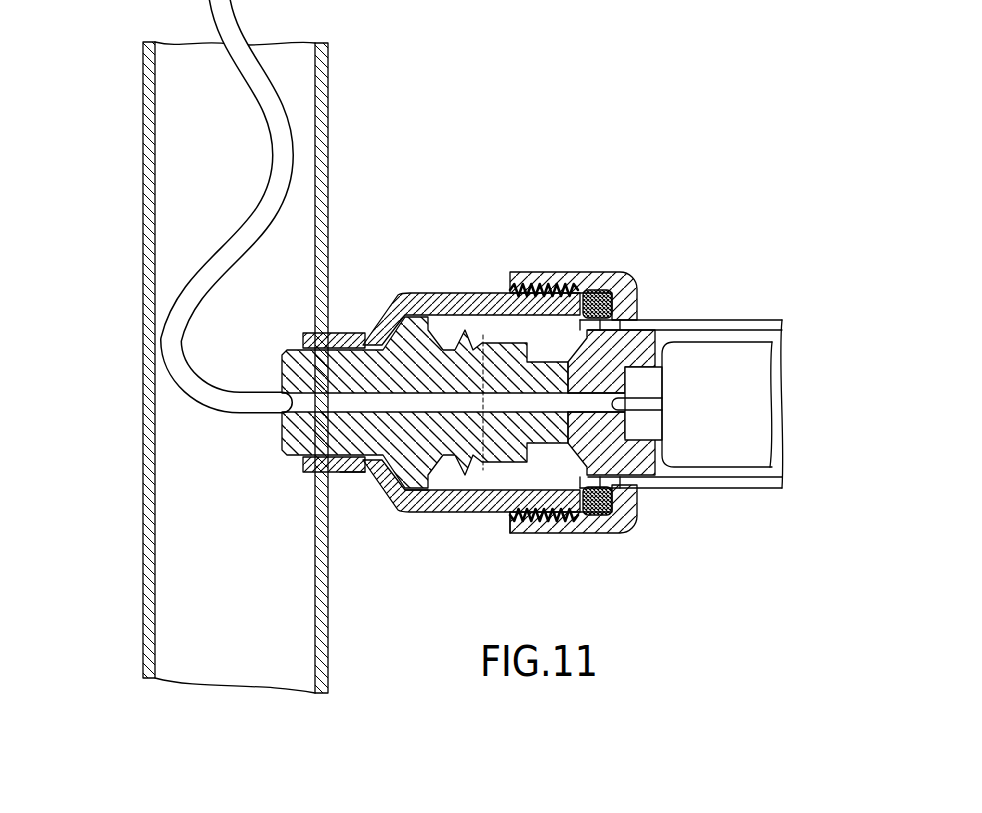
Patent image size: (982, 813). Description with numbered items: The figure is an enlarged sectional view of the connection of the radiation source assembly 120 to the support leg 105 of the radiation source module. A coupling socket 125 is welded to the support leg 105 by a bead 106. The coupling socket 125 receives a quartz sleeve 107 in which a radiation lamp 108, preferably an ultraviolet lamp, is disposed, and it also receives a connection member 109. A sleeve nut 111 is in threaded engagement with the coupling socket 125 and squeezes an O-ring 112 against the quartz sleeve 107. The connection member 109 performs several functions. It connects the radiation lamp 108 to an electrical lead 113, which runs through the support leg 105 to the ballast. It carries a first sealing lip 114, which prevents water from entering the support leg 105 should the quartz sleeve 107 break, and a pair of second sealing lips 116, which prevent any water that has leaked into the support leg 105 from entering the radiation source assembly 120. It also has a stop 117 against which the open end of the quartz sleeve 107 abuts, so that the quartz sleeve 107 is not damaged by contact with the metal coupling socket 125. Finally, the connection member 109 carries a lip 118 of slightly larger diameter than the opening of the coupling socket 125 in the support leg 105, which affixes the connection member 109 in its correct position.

The support leg 105 is at (143, 157).
The electrical lead 113 is at (185, 287).
The lip 118 is at (298, 462).
The bead 106 is at (346, 335).
The coupling socket 125 is at (420, 293).
The connection member 109 is at (502, 350).
The sleeve nut 111 is at (620, 286).
The O-ring 112 is at (604, 517).
The quartz sleeve 107 is at (686, 479).
The radiation lamp 108 is at (745, 437).
The radiation source assembly 120 is at (736, 306).
The first sealing lip 114 is at (496, 524).
The stop 117 is at (418, 490).
The second sealing lips 116 is at (362, 473).